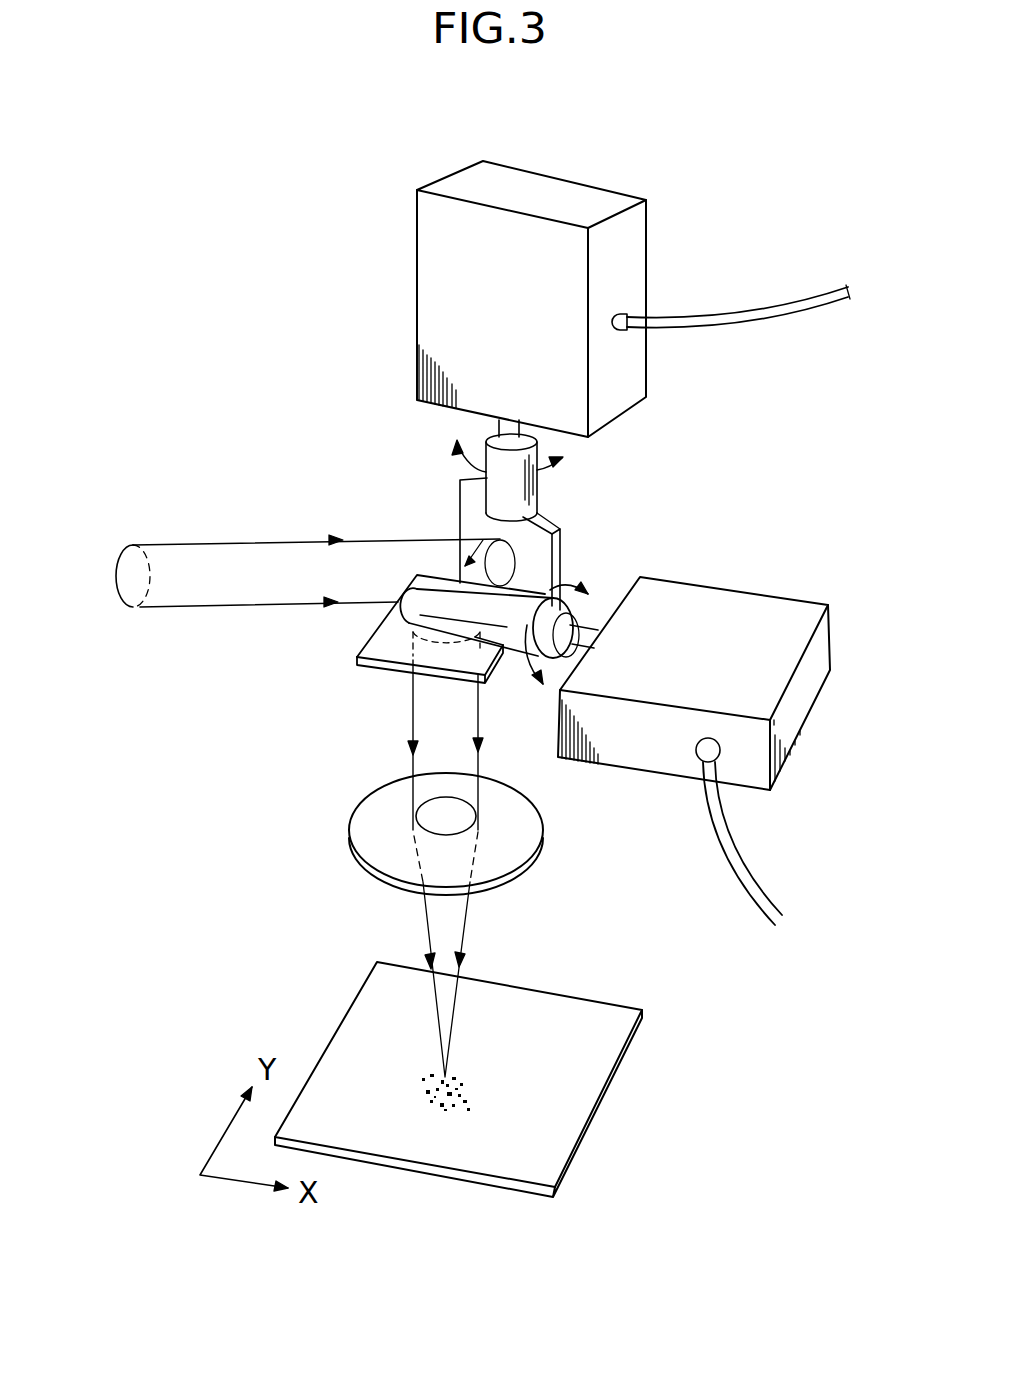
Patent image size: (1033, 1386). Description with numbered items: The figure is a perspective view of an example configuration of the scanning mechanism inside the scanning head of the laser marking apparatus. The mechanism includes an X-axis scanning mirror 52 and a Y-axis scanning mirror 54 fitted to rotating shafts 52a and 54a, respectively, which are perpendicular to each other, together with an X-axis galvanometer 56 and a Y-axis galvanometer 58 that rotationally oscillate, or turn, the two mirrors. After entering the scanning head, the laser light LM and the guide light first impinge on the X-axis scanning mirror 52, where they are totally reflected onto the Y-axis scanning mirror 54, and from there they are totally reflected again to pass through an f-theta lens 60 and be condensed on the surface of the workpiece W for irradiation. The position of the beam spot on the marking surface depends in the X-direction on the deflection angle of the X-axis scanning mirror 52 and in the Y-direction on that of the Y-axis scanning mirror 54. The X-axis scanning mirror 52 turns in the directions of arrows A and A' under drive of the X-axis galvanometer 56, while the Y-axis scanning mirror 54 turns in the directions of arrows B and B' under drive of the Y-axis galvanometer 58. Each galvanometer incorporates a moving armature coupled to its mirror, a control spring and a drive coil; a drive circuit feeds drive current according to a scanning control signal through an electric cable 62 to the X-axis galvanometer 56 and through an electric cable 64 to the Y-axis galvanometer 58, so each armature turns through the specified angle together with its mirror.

The X-axis scanning mirror 52 is at (468, 508).
The rotating shaft 52a is at (520, 418).
The Y-axis scanning mirror 54 is at (393, 647).
The rotating shaft 54a is at (583, 633).
The X-axis galvanometer 56 is at (433, 293).
The Y-axis galvanometer 58 is at (737, 600).
The f θ lens 60 is at (372, 818).
The electric cable 62 is at (797, 298).
The electric cable 64 is at (748, 867).
The workpiece W is at (572, 1072).
The laser light LM is at (313, 608).